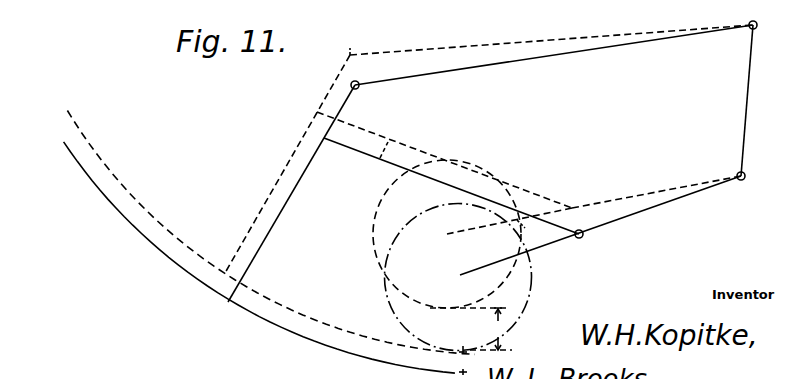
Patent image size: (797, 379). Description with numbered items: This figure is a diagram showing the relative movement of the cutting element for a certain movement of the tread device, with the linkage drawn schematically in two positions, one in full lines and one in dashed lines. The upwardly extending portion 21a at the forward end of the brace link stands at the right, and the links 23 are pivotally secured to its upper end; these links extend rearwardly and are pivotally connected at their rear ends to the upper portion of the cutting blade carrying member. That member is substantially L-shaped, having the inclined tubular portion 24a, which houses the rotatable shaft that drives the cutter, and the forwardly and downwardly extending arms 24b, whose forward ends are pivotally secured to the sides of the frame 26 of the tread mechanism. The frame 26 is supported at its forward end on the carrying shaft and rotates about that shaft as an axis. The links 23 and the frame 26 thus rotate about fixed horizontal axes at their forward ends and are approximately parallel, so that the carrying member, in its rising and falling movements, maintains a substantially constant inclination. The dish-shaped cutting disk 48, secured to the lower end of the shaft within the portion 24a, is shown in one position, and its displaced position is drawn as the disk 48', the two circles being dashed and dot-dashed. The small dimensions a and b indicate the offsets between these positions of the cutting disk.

The links 23 is at (552, 56).
The upwardly extending portion 21a is at (746, 118).
The inclined tubular portion 24a is at (288, 200).
The arms 24b is at (380, 159).
The frame 26 is at (620, 220).
The dish-shaped cutting disk 48 is at (270, 233).
The arc (solid position) 48' is at (259, 257).
The offset dimension a is at (471, 329).
The offset dimension b is at (462, 360).